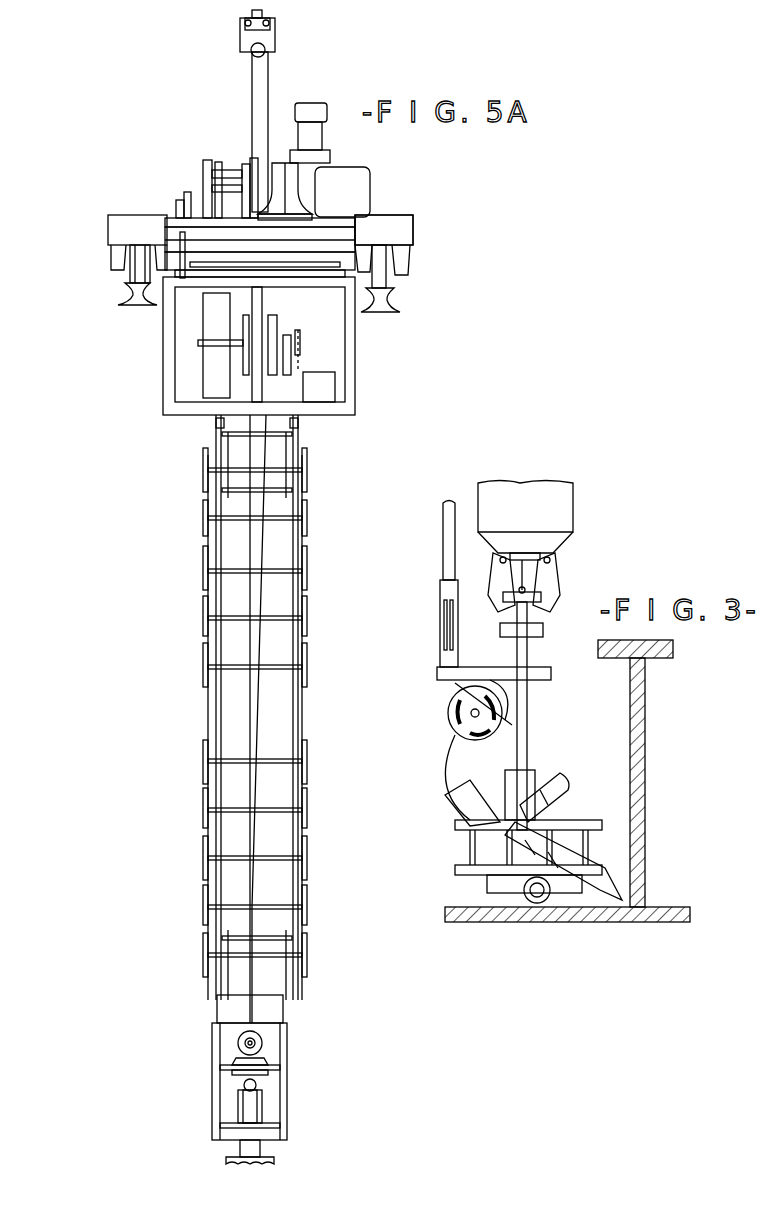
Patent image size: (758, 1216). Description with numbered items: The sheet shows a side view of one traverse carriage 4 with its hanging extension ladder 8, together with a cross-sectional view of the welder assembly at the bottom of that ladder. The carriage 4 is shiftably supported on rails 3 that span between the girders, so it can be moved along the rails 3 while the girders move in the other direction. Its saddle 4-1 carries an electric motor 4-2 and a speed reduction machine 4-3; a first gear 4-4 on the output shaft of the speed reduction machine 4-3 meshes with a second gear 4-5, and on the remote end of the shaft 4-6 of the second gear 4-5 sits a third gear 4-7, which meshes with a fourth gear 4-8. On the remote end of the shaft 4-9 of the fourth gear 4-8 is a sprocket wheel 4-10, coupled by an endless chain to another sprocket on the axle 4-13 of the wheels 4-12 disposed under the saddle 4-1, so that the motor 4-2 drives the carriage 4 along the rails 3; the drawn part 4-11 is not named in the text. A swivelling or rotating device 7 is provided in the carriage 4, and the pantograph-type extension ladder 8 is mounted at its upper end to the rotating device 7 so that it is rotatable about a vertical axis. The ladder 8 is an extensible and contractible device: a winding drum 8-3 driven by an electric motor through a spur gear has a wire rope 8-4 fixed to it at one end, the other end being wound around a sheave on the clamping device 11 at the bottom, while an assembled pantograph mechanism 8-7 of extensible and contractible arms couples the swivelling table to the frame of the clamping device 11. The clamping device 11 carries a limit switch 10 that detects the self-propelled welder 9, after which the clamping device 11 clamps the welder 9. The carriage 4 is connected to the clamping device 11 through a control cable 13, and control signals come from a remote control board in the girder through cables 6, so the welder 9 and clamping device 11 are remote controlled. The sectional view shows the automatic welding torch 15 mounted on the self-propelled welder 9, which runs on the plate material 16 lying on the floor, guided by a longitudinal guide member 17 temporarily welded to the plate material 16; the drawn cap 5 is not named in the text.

In FIG. 5A, the rails 3 is at (128, 305).
In FIG. 5A, the traverse carriage 4 is at (112, 240).
In FIG. 5A, the saddle 4-1 is at (410, 215).
In FIG. 5A, the electric motor 4-2 is at (365, 182).
In FIG. 5A, the speed reduction machine 4-3 is at (290, 178).
In FIG. 5A, the first gear 4-4 is at (268, 190).
In FIG. 5A, the second gear 4-5 is at (246, 165).
In FIG. 5A, the shaft 4-6 is at (244, 172).
In FIG. 5A, the third gear 4-7 is at (212, 165).
In FIG. 5A, the fourth gear 4-8 is at (200, 178).
In FIG. 5A, the shaft 4-9 is at (184, 195).
In FIG. 5A, the sprocket wheel 4-10 is at (178, 203).
In FIG. 5A, the side plate 4-11 is at (180, 265).
In FIG. 5A, the wheels 4-12 is at (383, 272).
In FIG. 5A, the axle 4-13 is at (215, 265).
In FIG. 5A, the cap 5 is at (276, 30).
In FIG. 5A, the cables 6 is at (268, 82).
In FIG. 5A, the swivelling device 7 is at (305, 268).
In FIG. 5A, the pantograph-type extension ladder 8 is at (208, 458).
In FIG. 5A, the winding drum 8-3 is at (265, 380).
In FIG. 5A, the wire rope 8-4 is at (265, 730).
In FIG. 5A, the pantograph mechanism 8-7 is at (302, 790).
In FIG. 3, the self-propelled welder 9 is at (527, 778).
In FIG. 5A, the limit switch 10 is at (226, 1160).
In FIG. 3, the limit switch 10 is at (525, 575).
In FIG. 5A, the clamping device 11 is at (283, 1135).
In FIG. 3, the clamping device 11 is at (558, 590).
In FIG. 3, the control cable 13 is at (450, 522).
In FIG. 3, the automatic welding torch 15 is at (605, 882).
In FIG. 3, the plate material 16 is at (630, 915).
In FIG. 3, the longitudinal guide members 17 is at (643, 725).